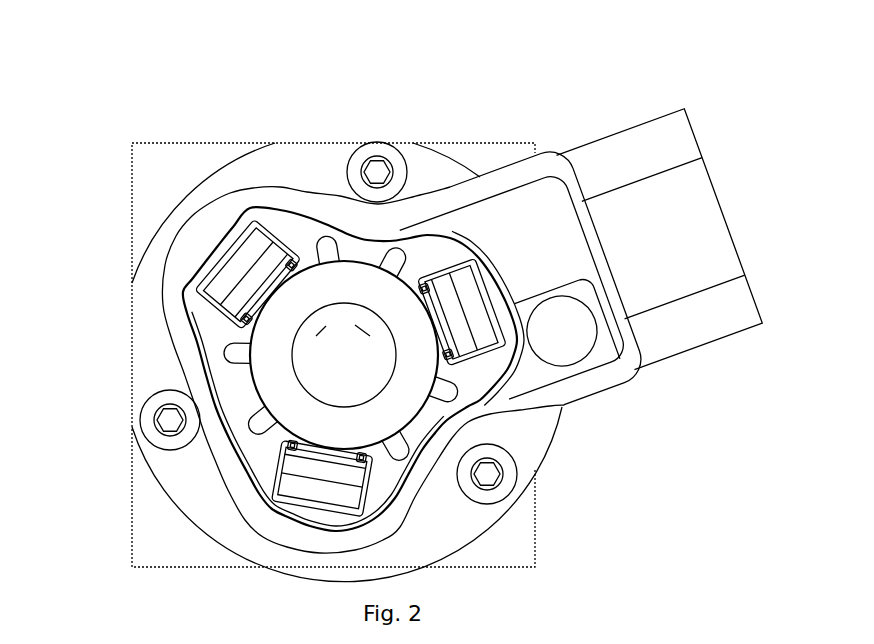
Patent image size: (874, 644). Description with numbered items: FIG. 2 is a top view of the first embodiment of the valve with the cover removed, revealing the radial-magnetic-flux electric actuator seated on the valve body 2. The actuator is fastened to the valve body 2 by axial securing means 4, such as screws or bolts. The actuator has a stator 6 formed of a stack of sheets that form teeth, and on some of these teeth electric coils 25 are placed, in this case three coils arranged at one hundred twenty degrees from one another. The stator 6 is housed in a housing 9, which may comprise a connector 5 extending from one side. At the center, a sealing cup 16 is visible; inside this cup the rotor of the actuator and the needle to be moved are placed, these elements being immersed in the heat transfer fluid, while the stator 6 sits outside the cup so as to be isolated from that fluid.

The valve body 2 is at (518, 506).
The axial securing means 4 is at (378, 158).
The connector 5 is at (652, 148).
The stator 6 is at (250, 202).
The housing 9 is at (172, 298).
The sealing cup 16 is at (306, 341).
The electric coils 25 is at (245, 268).